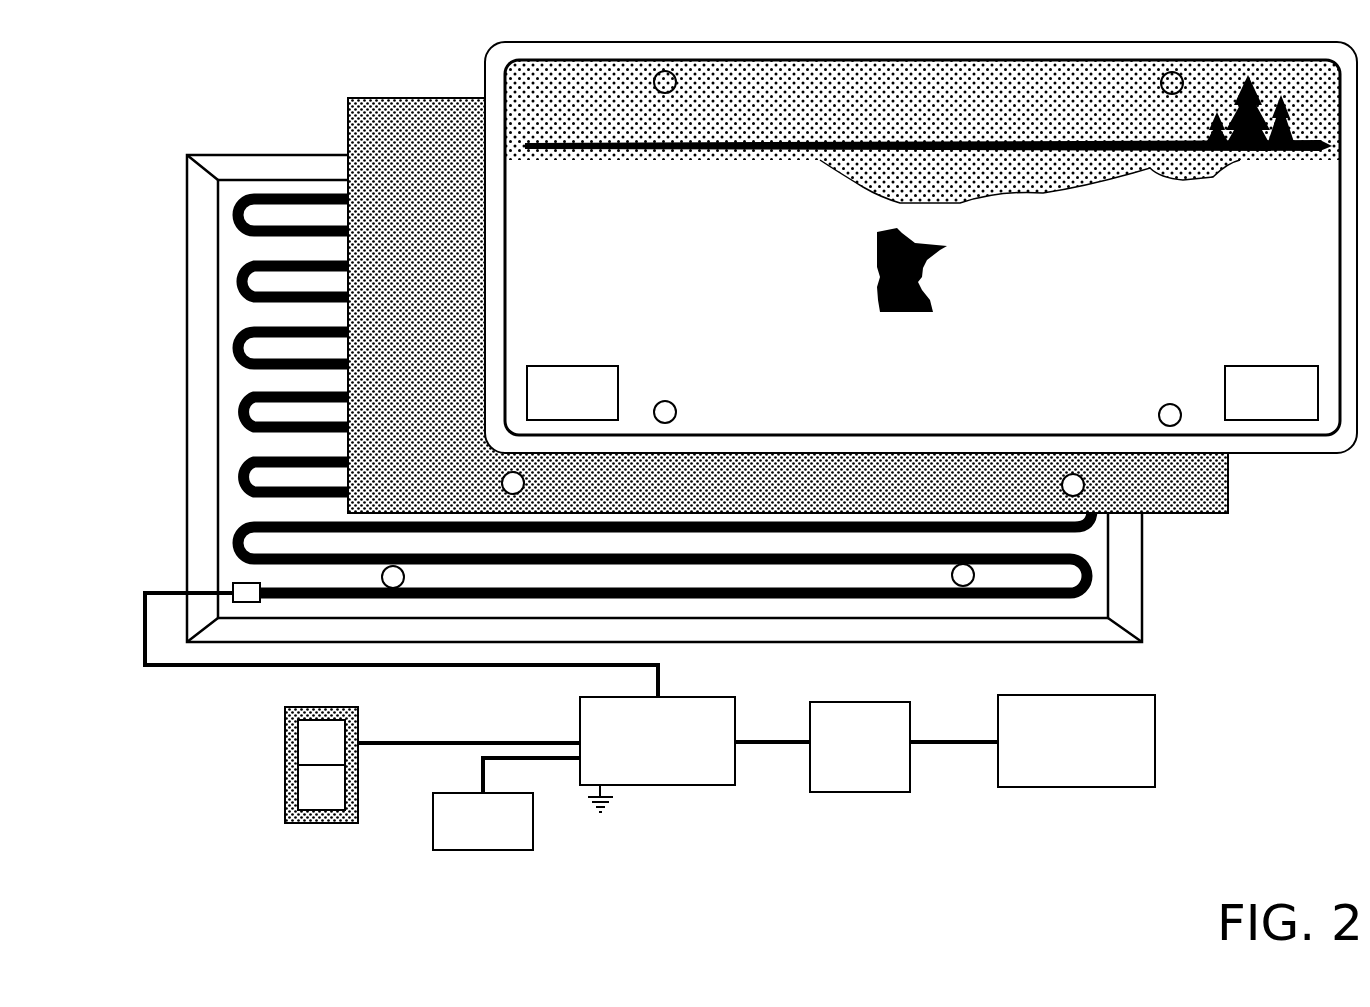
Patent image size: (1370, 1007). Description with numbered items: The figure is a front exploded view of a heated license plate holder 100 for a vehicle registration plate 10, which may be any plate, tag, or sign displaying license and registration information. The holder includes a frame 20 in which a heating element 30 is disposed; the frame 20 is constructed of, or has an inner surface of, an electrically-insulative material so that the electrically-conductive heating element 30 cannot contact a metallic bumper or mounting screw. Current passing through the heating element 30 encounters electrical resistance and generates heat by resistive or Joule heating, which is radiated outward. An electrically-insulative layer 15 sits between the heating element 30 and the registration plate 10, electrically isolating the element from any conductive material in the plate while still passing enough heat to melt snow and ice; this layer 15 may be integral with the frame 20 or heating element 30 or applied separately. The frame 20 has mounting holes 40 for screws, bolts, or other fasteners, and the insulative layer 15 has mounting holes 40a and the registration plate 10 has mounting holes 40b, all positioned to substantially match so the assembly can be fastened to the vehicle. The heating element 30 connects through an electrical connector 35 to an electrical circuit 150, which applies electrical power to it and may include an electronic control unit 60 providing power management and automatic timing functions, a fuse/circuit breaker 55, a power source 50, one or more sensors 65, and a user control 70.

The license plate holder 100 is at (714, 362).
The vehicle registration plate 10 is at (490, 68).
The electrically-insulative layer 15 is at (348, 100).
The frame 20 is at (262, 152).
The heating element 30 is at (237, 361).
The electrical connector 35 is at (247, 592).
The mounting holes 40 is at (974, 577).
The mounting holes 40a is at (1084, 487).
The mounting holes 40b is at (1180, 420).
The power source 50 is at (1076, 772).
The fuse/circuit breaker 55 is at (862, 793).
The electronic control unit 60 is at (697, 788).
The sensors 65 is at (433, 823).
The user control 70 is at (285, 807).
The electrical circuit 150 is at (687, 823).